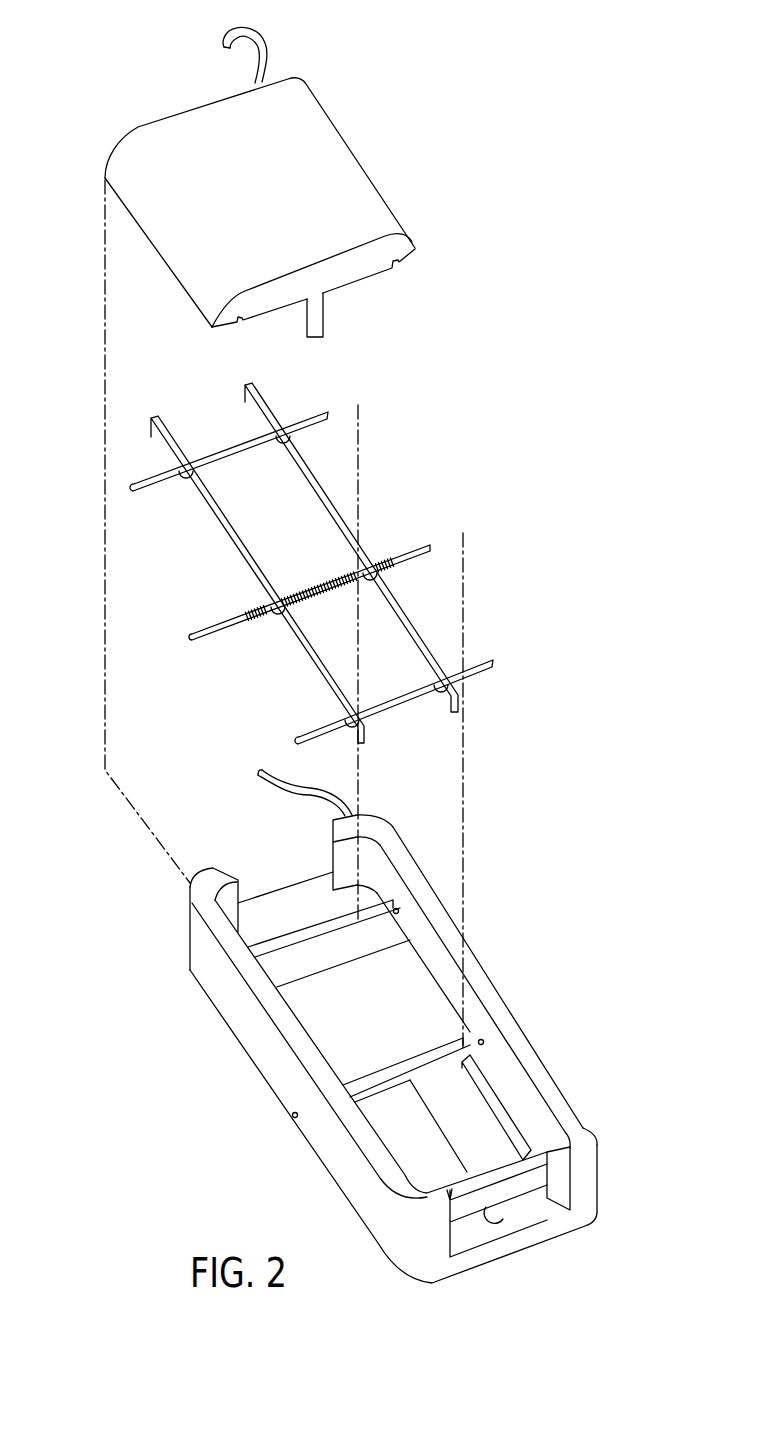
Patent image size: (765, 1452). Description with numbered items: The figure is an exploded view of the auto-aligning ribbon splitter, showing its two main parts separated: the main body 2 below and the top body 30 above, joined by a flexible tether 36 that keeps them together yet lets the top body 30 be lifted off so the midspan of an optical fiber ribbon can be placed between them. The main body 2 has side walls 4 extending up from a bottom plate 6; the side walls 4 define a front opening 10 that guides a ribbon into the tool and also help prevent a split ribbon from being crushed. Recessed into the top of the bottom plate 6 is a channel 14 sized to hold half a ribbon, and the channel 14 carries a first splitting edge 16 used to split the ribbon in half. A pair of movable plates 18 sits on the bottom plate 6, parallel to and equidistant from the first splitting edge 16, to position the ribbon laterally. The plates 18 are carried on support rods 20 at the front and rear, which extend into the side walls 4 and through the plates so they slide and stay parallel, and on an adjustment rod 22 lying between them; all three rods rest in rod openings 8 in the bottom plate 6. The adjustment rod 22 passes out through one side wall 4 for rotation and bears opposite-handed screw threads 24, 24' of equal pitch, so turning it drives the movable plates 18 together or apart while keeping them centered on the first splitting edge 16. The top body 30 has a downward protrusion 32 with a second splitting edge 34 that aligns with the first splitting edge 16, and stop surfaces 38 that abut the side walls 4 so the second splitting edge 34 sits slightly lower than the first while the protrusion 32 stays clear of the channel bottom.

The main body 2 is at (552, 1027).
The side walls 4 is at (493, 1000).
The bottom plate 6 is at (272, 907).
The rod openings 8 is at (322, 957).
The front opening 10 is at (517, 1222).
The channel 14 is at (466, 1143).
The first splitting edge 16 is at (443, 1135).
The movable plates 18 is at (400, 607).
The support rods 20 is at (313, 413).
The adjustment rod 22 is at (427, 543).
The screw threads 24 is at (231, 599).
The screw threads 24' is at (392, 534).
The top body 30 is at (248, 170).
The downward protrusion 32 is at (323, 318).
The second splitting edge 34 is at (292, 320).
The flexible tether 36 is at (270, 53).
The stop surfaces 38 is at (410, 243).